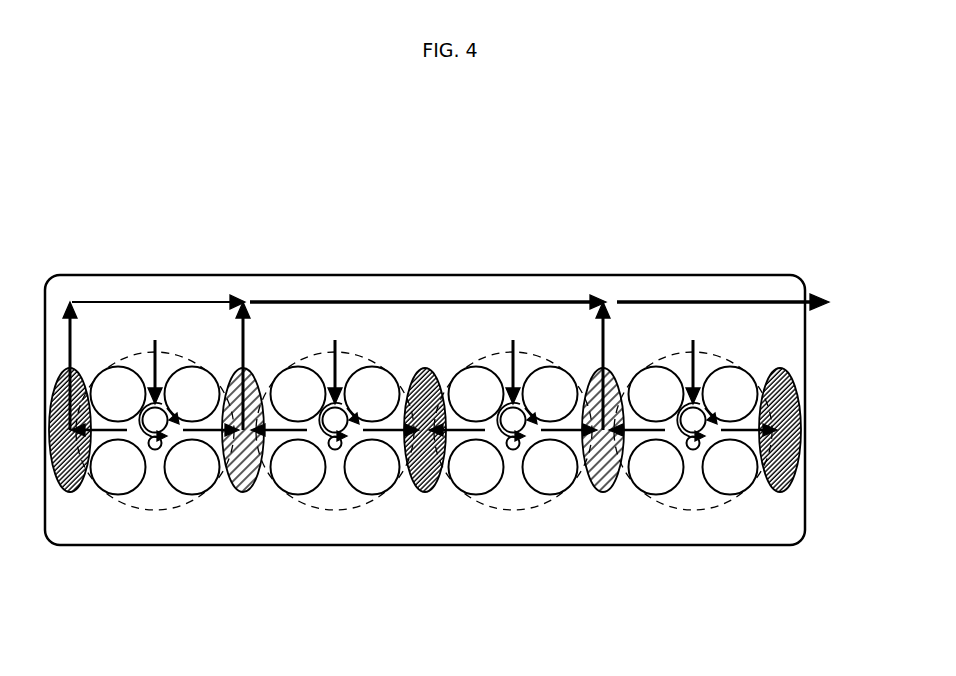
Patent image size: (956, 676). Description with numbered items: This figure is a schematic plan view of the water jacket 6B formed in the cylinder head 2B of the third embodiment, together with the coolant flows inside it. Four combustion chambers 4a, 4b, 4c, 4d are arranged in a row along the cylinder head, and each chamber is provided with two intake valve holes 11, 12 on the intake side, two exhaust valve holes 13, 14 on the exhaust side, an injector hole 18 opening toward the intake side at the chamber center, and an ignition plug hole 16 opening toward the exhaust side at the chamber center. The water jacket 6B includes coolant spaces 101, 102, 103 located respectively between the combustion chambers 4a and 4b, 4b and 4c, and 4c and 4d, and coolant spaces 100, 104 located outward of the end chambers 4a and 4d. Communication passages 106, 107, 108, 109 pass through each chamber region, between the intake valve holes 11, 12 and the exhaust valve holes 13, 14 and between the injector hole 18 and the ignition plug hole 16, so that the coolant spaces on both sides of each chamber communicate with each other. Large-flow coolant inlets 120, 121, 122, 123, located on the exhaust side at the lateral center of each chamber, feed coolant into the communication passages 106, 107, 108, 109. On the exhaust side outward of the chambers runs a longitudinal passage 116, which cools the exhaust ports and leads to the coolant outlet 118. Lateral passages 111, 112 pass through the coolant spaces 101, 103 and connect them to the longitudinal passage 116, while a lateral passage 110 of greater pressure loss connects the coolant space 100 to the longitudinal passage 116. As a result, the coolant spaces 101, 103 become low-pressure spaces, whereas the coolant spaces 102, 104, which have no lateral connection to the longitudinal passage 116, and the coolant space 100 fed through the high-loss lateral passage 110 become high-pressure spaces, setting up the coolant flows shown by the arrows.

The cylinder head 2B is at (735, 277).
The water jacket 6B is at (763, 295).
The coolant outlet 118 is at (806, 318).
The combustion chamber 4a is at (121, 350).
The combustion chamber 4b is at (356, 352).
The combustion chamber 4c is at (478, 352).
The combustion chamber 4d is at (659, 350).
The coolant space 100 is at (62, 492).
The coolant space 101 is at (241, 492).
The coolant space 102 is at (425, 492).
The coolant space 103 is at (603, 492).
The coolant space 104 is at (782, 492).
The communication passage 106 is at (187, 472).
The communication passage 107 is at (374, 542).
The communication passage 108 is at (533, 482).
The communication passage 109 is at (722, 494).
The intake valve hole 11 is at (290, 492).
The intake valve hole 12 is at (384, 492).
The exhaust valve hole 13 is at (300, 366).
The exhaust valve hole 14 is at (386, 372).
The ignition plug hole 16 is at (333, 452).
The injector hole 18 is at (340, 452).
The lateral passage 110 is at (60, 342).
The lateral passage 111 is at (243, 312).
The lateral passage 112 is at (600, 305).
The longitudinal passage 116 is at (617, 300).
The coolant inlet 120 is at (155, 338).
The coolant inlet 121 is at (335, 338).
The coolant inlet 122 is at (513, 338).
The coolant inlet 123 is at (693, 338).